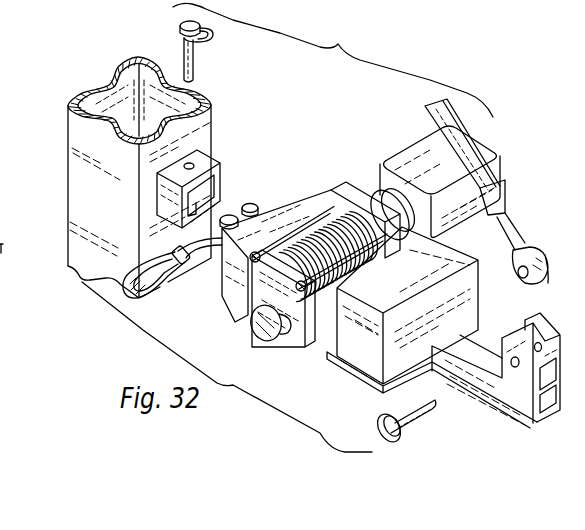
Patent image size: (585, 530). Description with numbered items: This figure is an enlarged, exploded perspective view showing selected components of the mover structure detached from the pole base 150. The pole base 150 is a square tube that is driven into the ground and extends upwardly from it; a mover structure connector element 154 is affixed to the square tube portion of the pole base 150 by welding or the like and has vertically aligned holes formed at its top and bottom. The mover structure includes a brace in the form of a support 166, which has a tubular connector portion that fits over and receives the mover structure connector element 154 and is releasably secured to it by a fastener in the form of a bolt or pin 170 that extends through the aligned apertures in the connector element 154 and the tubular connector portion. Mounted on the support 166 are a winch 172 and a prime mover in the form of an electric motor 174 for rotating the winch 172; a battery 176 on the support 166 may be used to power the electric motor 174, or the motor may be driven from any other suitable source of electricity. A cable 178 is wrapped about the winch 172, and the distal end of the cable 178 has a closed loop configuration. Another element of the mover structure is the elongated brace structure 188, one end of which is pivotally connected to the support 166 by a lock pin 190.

The pole base 150 is at (77, 163).
The mover structure connector element 154 is at (208, 161).
The support 166 is at (511, 396).
The bolt or pin 170 is at (196, 47).
The winch 172 is at (294, 328).
The electric motor 174 is at (426, 160).
The battery 176 is at (367, 355).
The cable 178 is at (197, 262).
The elongated brace structure 188 is at (447, 127).
The lock pin 190 is at (422, 418).